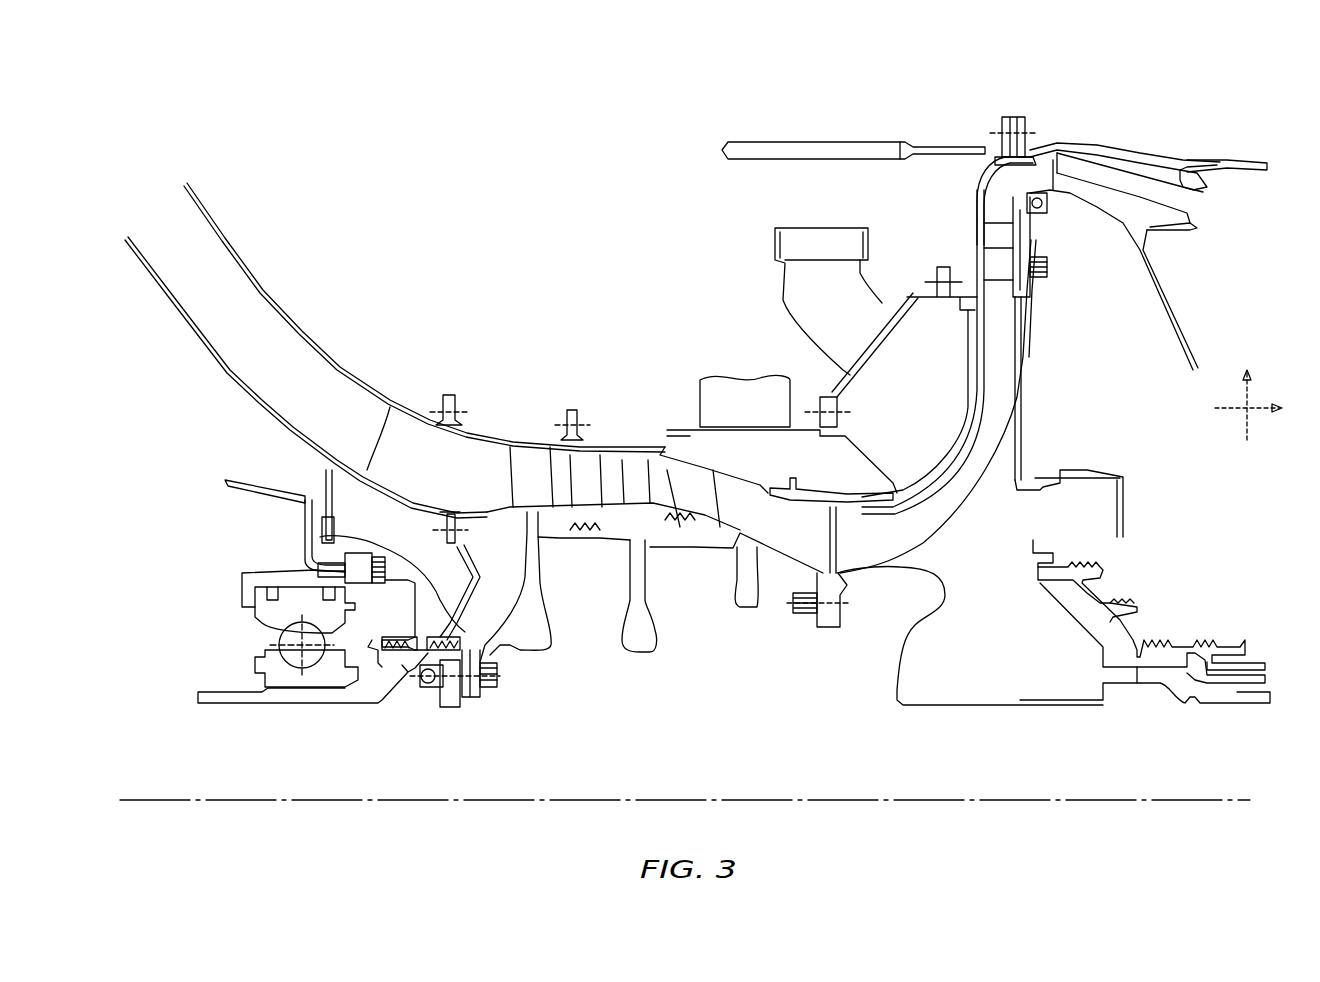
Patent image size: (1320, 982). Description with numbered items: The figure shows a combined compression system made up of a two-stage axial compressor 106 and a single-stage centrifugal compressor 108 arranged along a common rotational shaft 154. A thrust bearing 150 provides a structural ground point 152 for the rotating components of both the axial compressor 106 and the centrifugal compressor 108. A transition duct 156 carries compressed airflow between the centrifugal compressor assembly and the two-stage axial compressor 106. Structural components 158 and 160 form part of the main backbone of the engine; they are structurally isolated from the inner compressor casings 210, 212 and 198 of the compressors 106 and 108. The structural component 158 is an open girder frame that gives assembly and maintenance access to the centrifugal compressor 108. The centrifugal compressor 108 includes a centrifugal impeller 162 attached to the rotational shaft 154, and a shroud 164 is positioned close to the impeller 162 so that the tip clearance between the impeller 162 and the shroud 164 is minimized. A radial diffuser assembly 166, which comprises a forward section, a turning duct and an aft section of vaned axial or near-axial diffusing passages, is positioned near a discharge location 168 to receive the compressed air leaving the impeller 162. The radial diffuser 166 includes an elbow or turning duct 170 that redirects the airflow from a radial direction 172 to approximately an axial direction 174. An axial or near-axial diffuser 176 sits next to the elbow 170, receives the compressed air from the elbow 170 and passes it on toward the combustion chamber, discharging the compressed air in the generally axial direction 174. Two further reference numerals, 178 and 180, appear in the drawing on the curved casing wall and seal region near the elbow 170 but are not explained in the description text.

The two-stage axial compressor 106 is at (626, 486).
The single-stage centrifugal compressor 108 is at (1055, 78).
The thrust bearing 150 is at (235, 590).
The structural ground point 152 is at (235, 505).
The rotational shaft 154 is at (1247, 692).
The transition duct 156 is at (212, 210).
The structural component 158 is at (812, 140).
The structural component 160 is at (1250, 155).
The centrifugal impeller 162 is at (888, 548).
The shroud 164 is at (967, 343).
The radial diffuser assembly 166 is at (1030, 248).
The discharge location 168 is at (1043, 310).
The elbow or turning duct 170 is at (990, 172).
The radial direction 172 is at (1247, 425).
The axial direction 174 is at (1263, 408).
The axial or near-axial diffuser 176 is at (1123, 148).
The curved casing wall 178 is at (978, 185).
The seal ring 180 is at (1023, 230).
The inner compressor casing 198 is at (863, 355).
The inner compressor casing 210 is at (500, 432).
The inner compressor casing 212 is at (620, 440).